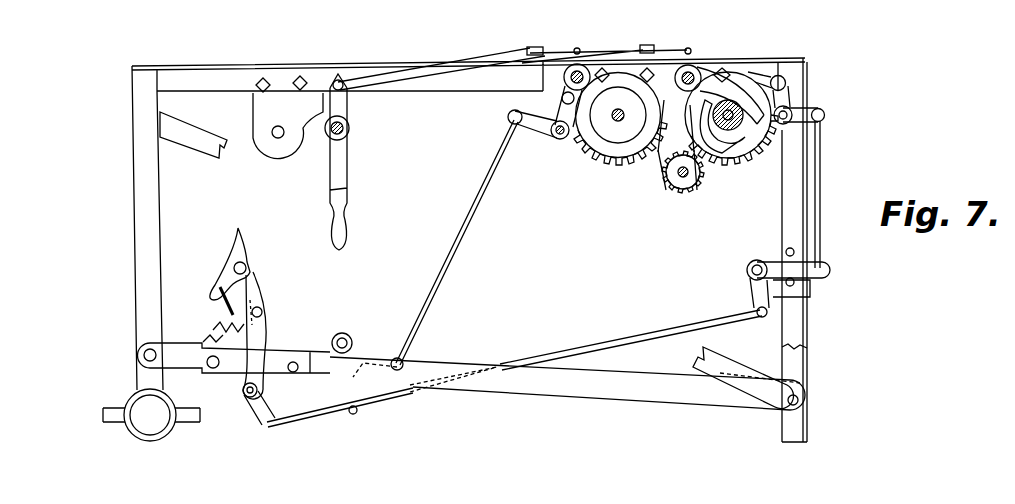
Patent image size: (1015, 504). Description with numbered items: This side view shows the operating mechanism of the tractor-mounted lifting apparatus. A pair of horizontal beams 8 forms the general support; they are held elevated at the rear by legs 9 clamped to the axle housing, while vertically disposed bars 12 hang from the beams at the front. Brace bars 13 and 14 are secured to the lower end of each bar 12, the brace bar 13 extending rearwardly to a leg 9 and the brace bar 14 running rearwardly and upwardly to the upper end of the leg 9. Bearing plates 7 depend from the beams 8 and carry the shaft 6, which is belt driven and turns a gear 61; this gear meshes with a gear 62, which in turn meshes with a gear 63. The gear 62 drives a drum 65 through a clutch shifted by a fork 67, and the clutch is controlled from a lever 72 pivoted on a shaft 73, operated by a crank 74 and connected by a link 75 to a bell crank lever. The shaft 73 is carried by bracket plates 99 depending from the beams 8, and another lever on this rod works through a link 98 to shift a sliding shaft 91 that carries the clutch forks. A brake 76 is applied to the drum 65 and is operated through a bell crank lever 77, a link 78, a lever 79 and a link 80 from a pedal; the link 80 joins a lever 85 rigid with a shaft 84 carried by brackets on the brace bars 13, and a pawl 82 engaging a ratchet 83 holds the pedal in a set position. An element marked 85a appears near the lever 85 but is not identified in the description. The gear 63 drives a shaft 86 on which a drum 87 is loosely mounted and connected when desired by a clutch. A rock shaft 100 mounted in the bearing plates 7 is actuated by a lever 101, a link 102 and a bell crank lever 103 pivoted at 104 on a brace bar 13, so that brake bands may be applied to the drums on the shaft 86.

The shaft 6 is at (678, 182).
The bearing plates 7 is at (672, 155).
The horizontal beams 8 is at (215, 80).
The legs 9 is at (137, 250).
The vertically disposed bars 12 is at (806, 333).
The brace bar 13 is at (600, 393).
The brace bar 14 is at (186, 136).
The gear 61 is at (692, 190).
The gear 62 is at (752, 163).
The gear 63 is at (608, 168).
The drum 65 is at (765, 82).
The fork 67 is at (733, 90).
The lever 72 is at (343, 98).
The shaft 73 is at (330, 138).
The crank 74 is at (344, 180).
The link 75 is at (605, 53).
The brake 76 is at (697, 120).
The bell crank lever 77 is at (810, 110).
The link 78 is at (835, 190).
The lever 79 is at (775, 262).
The link 80 is at (632, 334).
The pawl 82 is at (218, 328).
The ratchet 83 is at (285, 352).
The shaft 84 is at (247, 398).
The lever 85 is at (275, 410).
The rod 85a is at (300, 427).
The shaft 86 is at (598, 143).
The drum 87 is at (262, 343).
The sliding shaft 91 is at (572, 83).
The link 98 is at (452, 62).
The bracket plates 99 is at (265, 130).
The rock shaft 100 is at (555, 137).
The lever 101 is at (520, 128).
The link 102 is at (455, 243).
The bell crank lever 103 is at (370, 348).
The pivot 104 is at (345, 333).